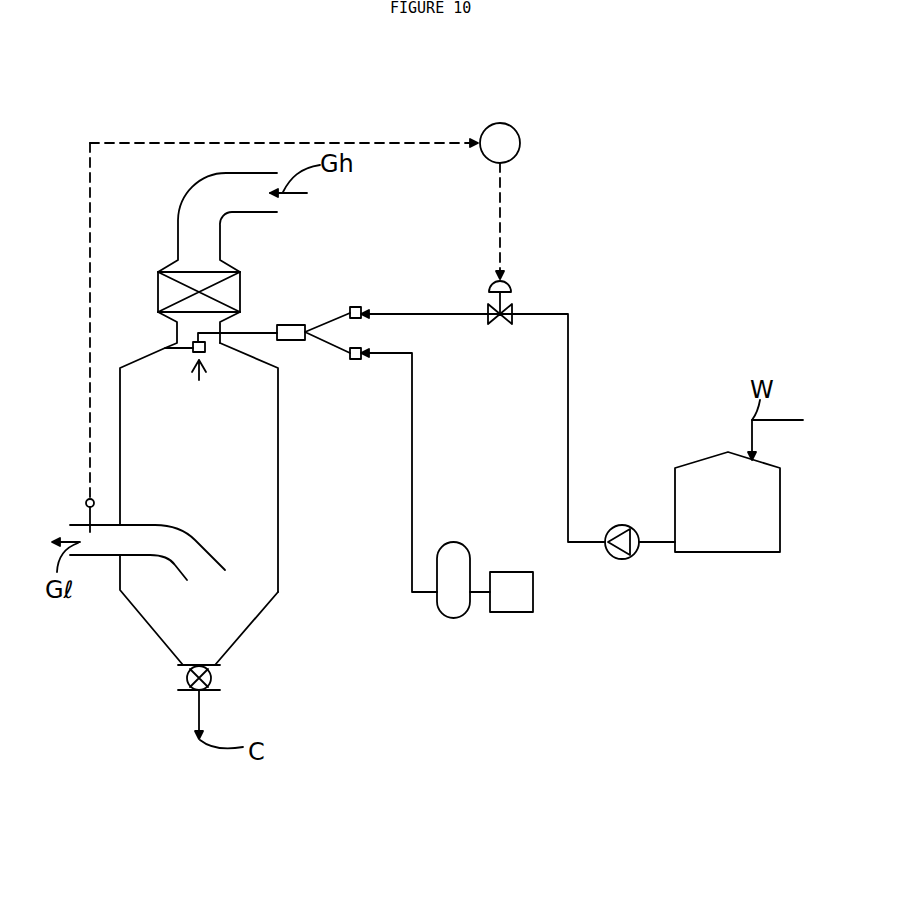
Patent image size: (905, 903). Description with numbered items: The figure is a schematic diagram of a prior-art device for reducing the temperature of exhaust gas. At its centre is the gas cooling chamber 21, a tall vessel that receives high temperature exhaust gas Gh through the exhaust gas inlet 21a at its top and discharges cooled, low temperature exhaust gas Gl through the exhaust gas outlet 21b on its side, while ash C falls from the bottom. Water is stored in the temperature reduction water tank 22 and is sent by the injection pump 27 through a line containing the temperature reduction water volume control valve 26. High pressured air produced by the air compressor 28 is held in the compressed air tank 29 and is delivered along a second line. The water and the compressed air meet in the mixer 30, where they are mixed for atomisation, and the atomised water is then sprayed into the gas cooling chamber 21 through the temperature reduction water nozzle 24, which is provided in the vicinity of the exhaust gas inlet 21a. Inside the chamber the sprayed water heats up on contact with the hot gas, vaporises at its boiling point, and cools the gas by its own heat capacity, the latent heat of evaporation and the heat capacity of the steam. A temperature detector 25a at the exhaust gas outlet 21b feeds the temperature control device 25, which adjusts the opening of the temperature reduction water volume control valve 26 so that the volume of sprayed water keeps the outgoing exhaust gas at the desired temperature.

The gas cooling chamber 21 is at (278, 475).
The exhaust gas inlet 21a is at (203, 323).
The exhaust gas outlet 21b is at (120, 540).
The temperature reduction water tank 22 is at (745, 553).
The temperature reduction water nozzle 24 is at (165, 347).
The temperature control device 25 is at (515, 124).
The temperature detector 25a is at (85, 502).
The temperature reduction water volume control valve 26 is at (512, 308).
The injection pump 27 is at (617, 558).
The air compressor 28 is at (512, 613).
The compressed air tank 29 is at (447, 620).
The mixer 30 is at (292, 340).